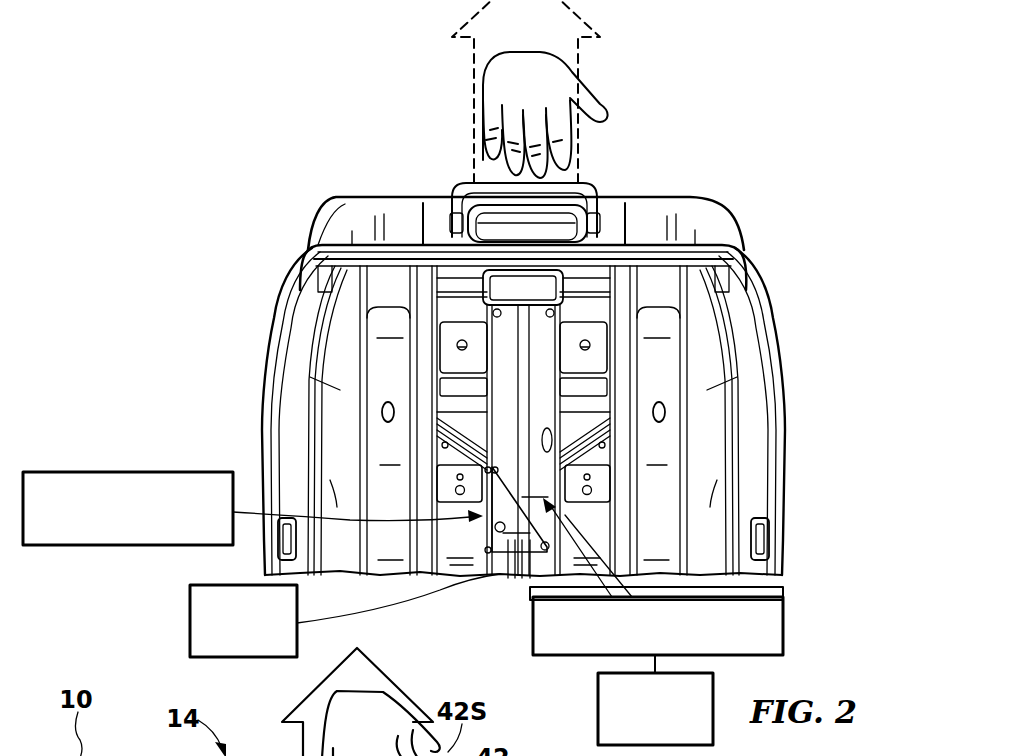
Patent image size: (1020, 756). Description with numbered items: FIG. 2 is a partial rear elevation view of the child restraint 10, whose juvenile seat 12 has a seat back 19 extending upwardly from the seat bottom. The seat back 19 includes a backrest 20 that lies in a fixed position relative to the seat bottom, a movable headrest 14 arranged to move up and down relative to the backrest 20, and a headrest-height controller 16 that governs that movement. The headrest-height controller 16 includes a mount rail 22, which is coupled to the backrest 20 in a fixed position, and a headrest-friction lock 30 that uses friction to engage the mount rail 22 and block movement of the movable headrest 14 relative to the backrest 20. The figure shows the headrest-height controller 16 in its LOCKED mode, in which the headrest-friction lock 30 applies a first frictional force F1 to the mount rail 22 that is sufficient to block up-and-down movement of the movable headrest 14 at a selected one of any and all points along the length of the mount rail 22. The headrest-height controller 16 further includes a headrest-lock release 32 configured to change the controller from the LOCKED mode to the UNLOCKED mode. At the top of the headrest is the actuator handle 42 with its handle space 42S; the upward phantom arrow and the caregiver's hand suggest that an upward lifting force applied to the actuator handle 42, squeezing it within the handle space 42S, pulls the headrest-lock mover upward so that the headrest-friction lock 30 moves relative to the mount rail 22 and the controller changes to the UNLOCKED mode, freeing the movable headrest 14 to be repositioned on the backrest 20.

The child restraint 10 is at (521, 356).
The juvenile seat 12 is at (768, 262).
The movable headrest 14 is at (677, 185).
The headrest-height controller 16 is at (508, 592).
The seat back 19 is at (381, 190).
The backrest 20 is at (250, 433).
The mount rail 22 is at (190, 628).
The headrest-friction lock 30 is at (92, 472).
The headrest-lock release 32 is at (560, 478).
The actuator handle 42 is at (495, 212).
The handle space 42S is at (588, 186).
The first frictional force F1 is at (535, 637).